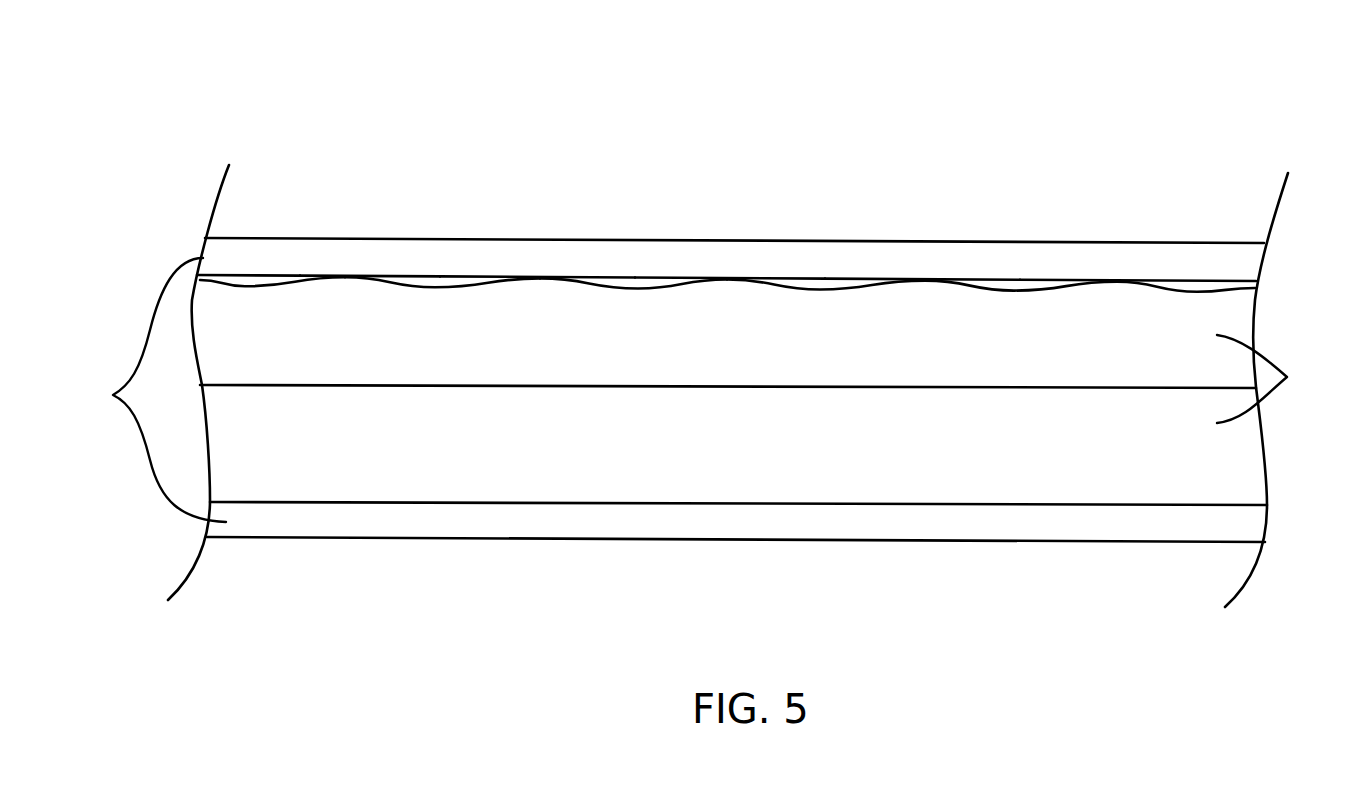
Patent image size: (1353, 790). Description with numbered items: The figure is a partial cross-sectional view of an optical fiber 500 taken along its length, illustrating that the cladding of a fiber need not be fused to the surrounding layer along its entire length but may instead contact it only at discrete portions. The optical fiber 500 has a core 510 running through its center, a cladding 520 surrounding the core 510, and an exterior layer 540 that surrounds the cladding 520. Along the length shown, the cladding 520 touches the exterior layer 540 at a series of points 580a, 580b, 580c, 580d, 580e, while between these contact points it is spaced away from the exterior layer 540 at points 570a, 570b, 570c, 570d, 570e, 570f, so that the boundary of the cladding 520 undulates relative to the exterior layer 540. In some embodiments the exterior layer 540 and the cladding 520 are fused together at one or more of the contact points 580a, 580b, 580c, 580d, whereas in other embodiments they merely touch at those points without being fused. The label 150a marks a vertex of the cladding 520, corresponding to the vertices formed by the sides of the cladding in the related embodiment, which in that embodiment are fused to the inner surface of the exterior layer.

The optical fiber 500 is at (1240, 98).
The vertex 150a is at (1245, 277).
The core 510 is at (205, 386).
The cladding 520 is at (1288, 377).
The exterior layer 540 is at (111, 395).
The point 570a is at (1197, 291).
The point 570b is at (1014, 290).
The point 570c is at (820, 289).
The point 570d is at (638, 288).
The point 570e is at (435, 287).
The point 570f is at (240, 286).
The point 580a is at (1117, 275).
The point 580b is at (925, 275).
The point 580c is at (727, 275).
The point 580d is at (540, 275).
The point 580e is at (345, 275).